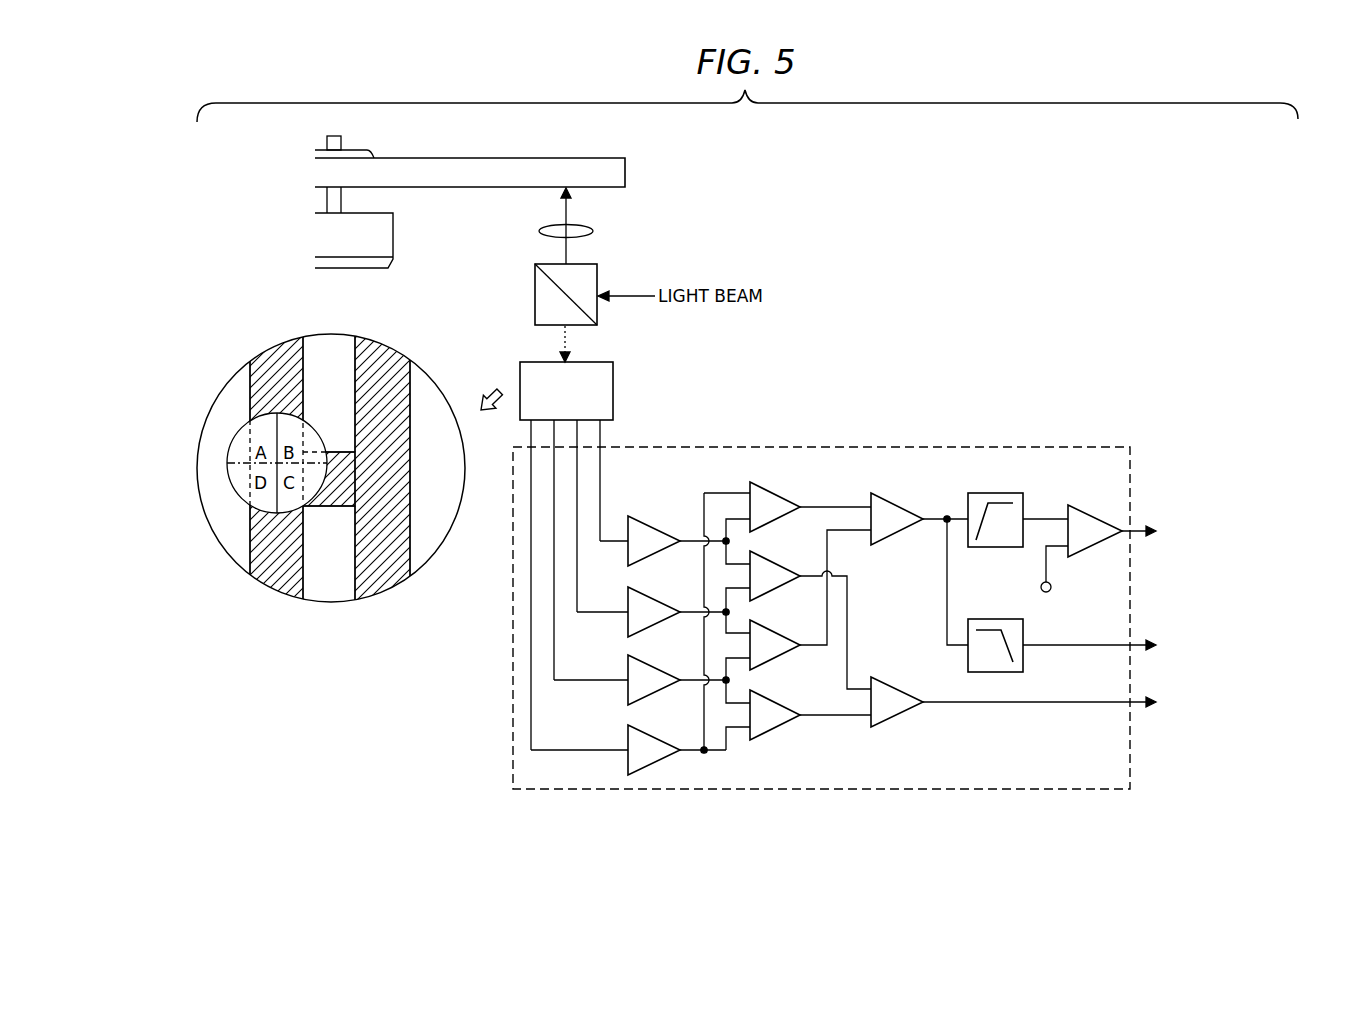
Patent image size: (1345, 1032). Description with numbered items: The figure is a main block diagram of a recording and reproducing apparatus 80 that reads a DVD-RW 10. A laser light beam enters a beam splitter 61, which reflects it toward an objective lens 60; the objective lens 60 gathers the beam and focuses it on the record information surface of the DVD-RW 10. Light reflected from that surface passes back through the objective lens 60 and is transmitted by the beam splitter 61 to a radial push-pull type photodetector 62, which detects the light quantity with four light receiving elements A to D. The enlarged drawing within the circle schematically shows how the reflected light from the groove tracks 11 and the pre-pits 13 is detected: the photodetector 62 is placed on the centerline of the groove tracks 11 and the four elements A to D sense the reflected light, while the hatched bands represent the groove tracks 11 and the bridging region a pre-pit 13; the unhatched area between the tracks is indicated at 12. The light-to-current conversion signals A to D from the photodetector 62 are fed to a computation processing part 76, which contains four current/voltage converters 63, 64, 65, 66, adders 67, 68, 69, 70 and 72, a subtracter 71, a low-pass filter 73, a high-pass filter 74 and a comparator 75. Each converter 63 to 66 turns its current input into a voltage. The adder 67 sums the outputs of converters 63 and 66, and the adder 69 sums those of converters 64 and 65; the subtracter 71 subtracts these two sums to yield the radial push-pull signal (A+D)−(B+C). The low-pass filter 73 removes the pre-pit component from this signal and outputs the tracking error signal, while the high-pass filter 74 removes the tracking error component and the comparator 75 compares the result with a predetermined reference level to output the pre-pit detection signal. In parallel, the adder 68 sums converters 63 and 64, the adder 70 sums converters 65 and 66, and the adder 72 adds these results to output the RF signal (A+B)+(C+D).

The DVD-RW 10 is at (630, 172).
The groove tracks 11 is at (280, 590).
The land 12 is at (322, 340).
The pre-pits 13 is at (350, 476).
The objective lens 60 is at (540, 232).
The beam splitter 61 is at (536, 296).
The photodetector 62 is at (614, 389).
The current/voltage converter 63 is at (652, 530).
The current/voltage converter 64 is at (652, 601).
The current/voltage converter 65 is at (652, 669).
The current/voltage converter 66 is at (652, 739).
The adder 67 is at (774, 494).
The adder 68 is at (774, 564).
The adder 69 is at (774, 633).
The adder 70 is at (774, 703).
The subtracter 71 is at (894, 506).
The adder 72 is at (894, 689).
The low-pass filter 73 is at (996, 619).
The high-pass filter 74 is at (996, 493).
The comparator 75 is at (1093, 517).
The computation processing part 76 is at (818, 447).
The recording and reproducing apparatus 80 is at (822, 262).